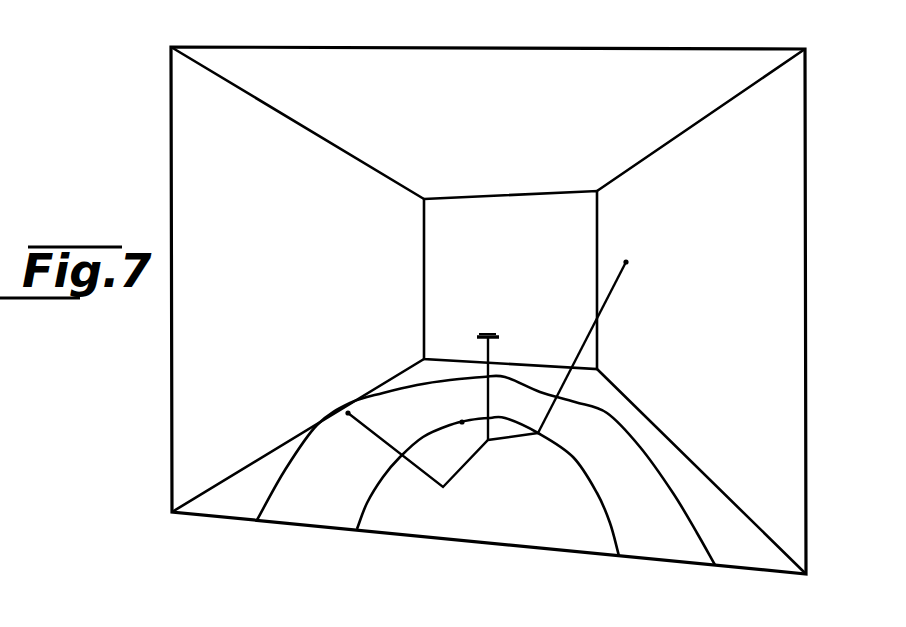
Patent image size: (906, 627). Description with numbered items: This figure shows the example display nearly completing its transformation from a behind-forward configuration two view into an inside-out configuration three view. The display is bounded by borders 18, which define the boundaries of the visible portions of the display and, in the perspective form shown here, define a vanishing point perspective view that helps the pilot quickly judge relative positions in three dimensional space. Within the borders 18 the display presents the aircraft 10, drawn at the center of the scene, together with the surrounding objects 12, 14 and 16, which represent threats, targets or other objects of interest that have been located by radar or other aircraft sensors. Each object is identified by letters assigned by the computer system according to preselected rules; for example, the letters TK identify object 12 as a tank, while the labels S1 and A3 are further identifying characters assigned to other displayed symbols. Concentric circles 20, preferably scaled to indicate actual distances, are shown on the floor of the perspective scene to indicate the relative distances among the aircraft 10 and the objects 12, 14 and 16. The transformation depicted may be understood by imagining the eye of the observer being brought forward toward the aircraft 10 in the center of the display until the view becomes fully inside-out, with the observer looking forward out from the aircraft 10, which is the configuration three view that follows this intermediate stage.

The borders 18 is at (548, 47).
The aircraft 10 is at (490, 333).
The object 12 is at (461, 422).
The object 14 is at (613, 345).
The object 16 is at (320, 424).
The concentric circles 20 is at (492, 470).
The source position S1 is at (431, 438).
The letters identifying a tank TK is at (458, 410).
The listening point A3 is at (631, 250).